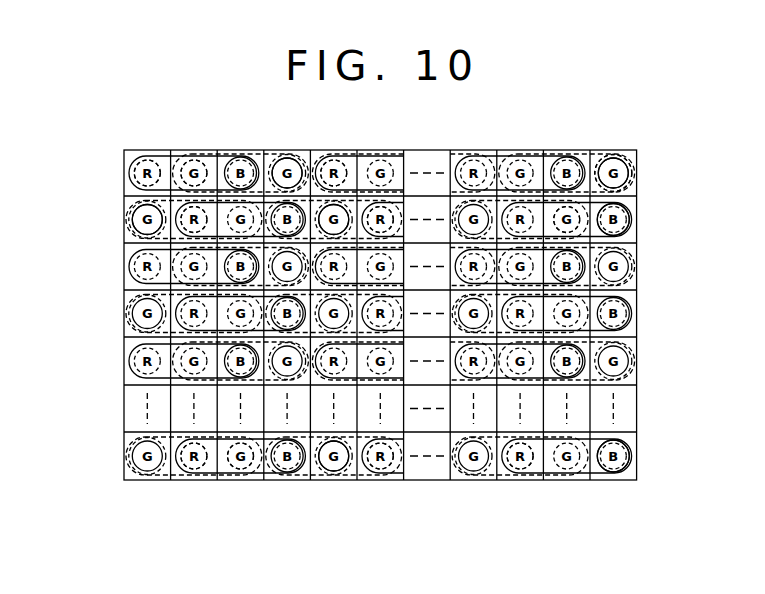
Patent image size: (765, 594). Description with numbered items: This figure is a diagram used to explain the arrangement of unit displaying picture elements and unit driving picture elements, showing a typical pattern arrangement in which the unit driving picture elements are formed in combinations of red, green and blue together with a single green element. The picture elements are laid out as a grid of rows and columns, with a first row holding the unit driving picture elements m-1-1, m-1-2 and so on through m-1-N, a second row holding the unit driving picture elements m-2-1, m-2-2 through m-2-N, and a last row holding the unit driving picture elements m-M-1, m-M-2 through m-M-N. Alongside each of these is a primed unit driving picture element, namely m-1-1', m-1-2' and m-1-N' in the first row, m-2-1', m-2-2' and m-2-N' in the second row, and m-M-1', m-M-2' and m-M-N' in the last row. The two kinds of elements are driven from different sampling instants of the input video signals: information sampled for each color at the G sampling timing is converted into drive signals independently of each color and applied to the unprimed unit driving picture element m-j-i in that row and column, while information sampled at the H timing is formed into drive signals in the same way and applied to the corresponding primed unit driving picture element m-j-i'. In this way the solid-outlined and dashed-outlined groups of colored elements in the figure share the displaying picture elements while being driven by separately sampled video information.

The unit driving picture element m-1-1 is at (101, 170).
The unit driving picture element m-1-1' is at (162, 151).
The unit driving picture element m-1-2 is at (251, 152).
The unit driving picture element m-1-2' is at (319, 151).
The unit driving picture element m-1-N is at (656, 172).
The unit driving picture element m-1-N' is at (579, 154).
The unit driving picture element m-2-1 is at (98, 221).
The unit driving picture element m-2-1' is at (120, 238).
The unit driving picture element m-2-2 is at (369, 159).
The unit driving picture element m-2-2' is at (420, 175).
The unit driving picture element m-2-N is at (662, 220).
The unit driving picture element m-2-N' is at (640, 240).
The unit driving picture element m-M-1 is at (162, 485).
The unit driving picture element m-M-1' is at (262, 485).
The unit driving picture element m-M-2 is at (309, 500).
The unit driving picture element m-M-2' is at (423, 501).
The unit driving picture element m-M-N is at (538, 484).
The unit driving picture element m-M-N' is at (655, 482).